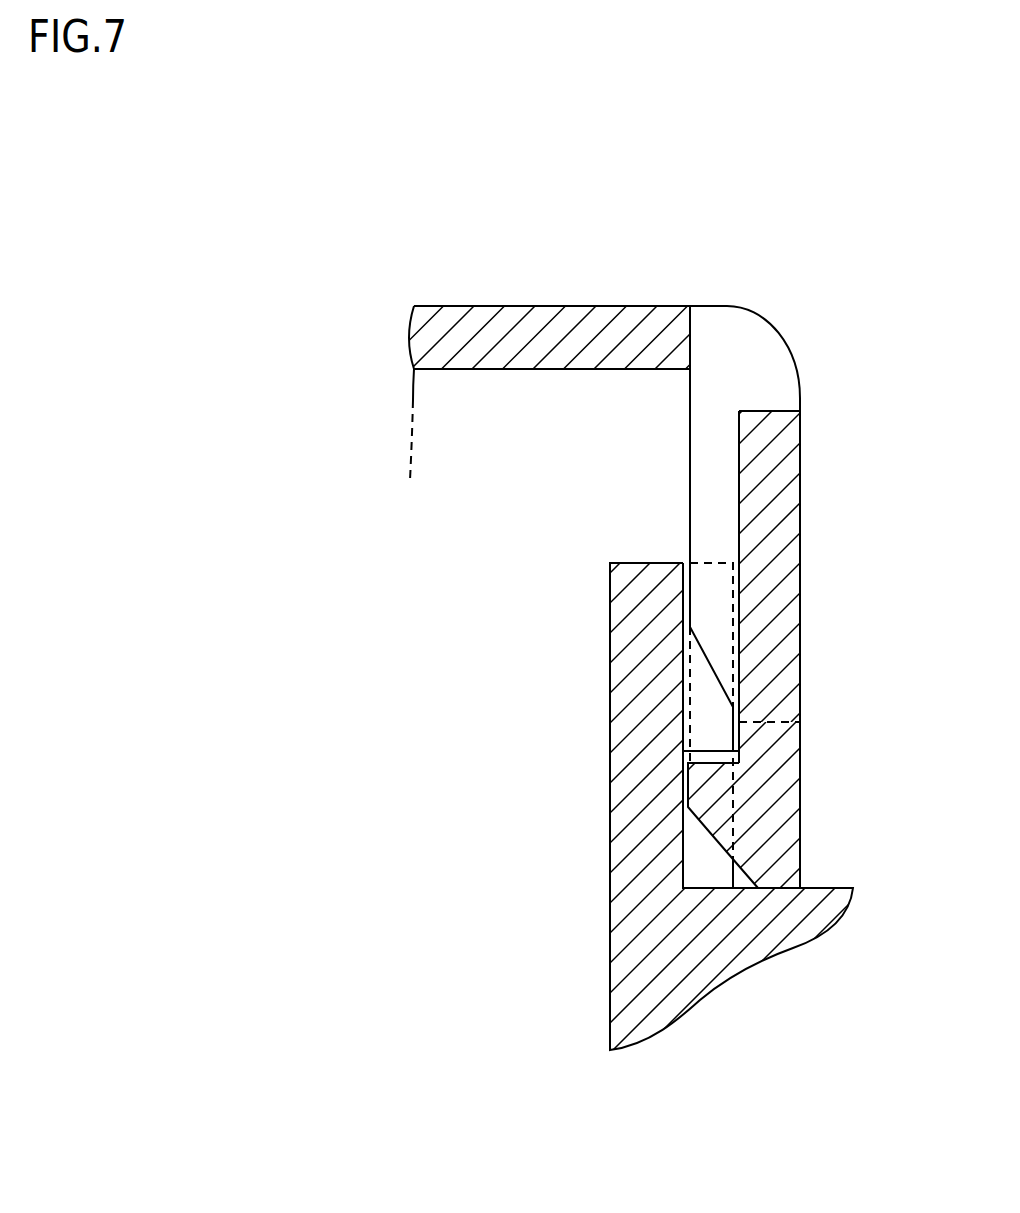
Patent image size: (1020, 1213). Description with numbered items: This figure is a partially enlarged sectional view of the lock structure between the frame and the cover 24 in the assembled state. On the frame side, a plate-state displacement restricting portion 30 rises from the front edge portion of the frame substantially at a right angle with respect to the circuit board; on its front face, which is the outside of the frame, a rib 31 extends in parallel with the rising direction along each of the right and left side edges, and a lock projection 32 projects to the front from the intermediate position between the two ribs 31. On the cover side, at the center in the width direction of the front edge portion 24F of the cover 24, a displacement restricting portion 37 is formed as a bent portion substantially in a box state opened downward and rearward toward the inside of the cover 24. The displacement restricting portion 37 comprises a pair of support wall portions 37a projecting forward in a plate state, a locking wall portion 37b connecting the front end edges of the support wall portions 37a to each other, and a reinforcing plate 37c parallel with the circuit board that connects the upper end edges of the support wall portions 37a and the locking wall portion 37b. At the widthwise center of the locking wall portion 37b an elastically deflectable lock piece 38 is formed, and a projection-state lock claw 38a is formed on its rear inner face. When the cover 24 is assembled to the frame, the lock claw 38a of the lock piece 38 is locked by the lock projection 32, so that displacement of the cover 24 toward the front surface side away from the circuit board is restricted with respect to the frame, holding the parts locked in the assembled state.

The cover 24 is at (422, 239).
The front edge portion of the cover 24F is at (859, 490).
The displacement restricting portion 37 is at (863, 173).
The support wall portion 37a is at (615, 408).
The locking wall portion 37b is at (772, 452).
The reinforcing plate 37c is at (533, 330).
The displacement restricting portion 30 is at (640, 698).
The rib 31 is at (707, 563).
The lock projection 32 is at (708, 707).
The lock piece 38 is at (773, 818).
The lock claw 38a is at (702, 793).